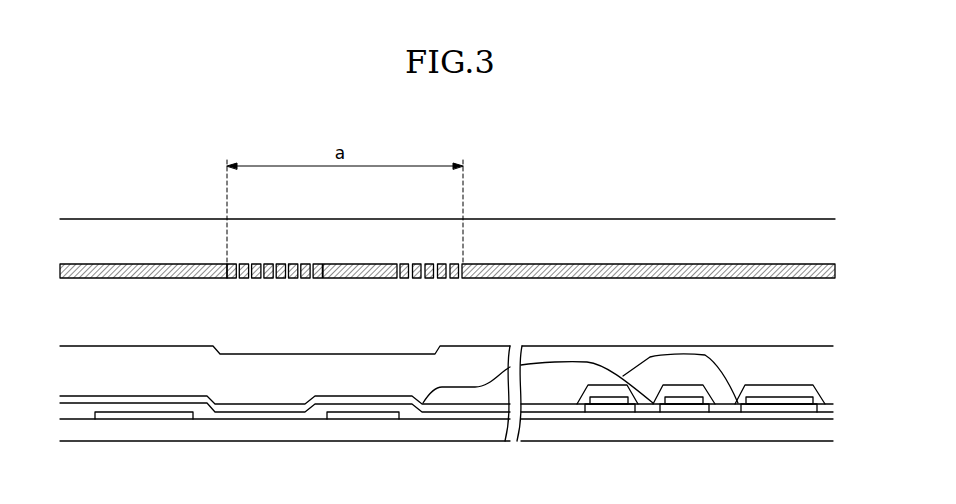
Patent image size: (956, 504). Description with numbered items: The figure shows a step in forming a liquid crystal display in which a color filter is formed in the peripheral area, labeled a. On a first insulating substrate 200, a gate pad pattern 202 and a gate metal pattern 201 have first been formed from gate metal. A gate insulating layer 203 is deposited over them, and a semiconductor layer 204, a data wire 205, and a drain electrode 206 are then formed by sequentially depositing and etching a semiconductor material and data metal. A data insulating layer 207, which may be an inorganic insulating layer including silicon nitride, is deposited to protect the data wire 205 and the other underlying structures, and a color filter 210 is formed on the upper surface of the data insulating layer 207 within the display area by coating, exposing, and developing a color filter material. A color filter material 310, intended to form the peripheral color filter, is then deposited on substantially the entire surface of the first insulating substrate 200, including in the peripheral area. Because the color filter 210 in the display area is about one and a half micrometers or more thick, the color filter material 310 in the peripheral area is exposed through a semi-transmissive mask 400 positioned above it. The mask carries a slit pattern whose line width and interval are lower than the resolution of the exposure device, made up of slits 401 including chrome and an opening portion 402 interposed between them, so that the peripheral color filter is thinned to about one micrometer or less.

The semi-transmissive mask 400 is at (535, 229).
The slits 401 is at (266, 264).
The opening portion 402 is at (306, 264).
The first insulating substrate 200 is at (183, 432).
The gate metal pattern 201 is at (338, 418).
The gate pad pattern 202 is at (127, 425).
The gate insulating layer 203 is at (235, 418).
The semiconductor layer 204 is at (615, 408).
The data wire 205 is at (678, 400).
The drain electrode 206 is at (803, 400).
The data insulating layer 207 is at (452, 408).
The color filter 210 is at (545, 392).
The color filter material 310 is at (392, 373).